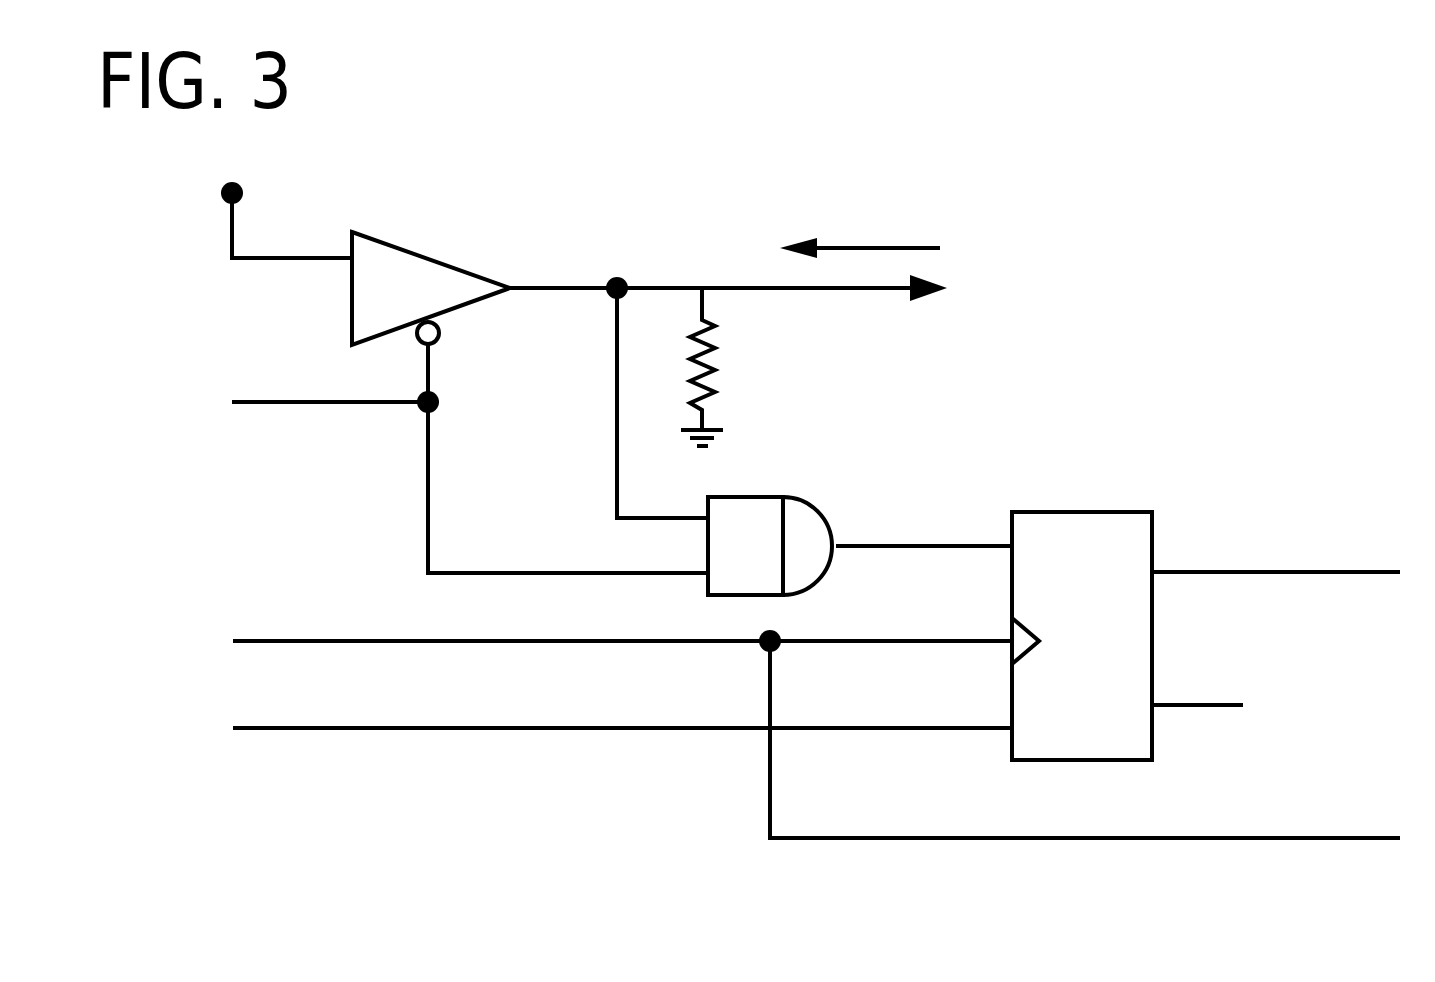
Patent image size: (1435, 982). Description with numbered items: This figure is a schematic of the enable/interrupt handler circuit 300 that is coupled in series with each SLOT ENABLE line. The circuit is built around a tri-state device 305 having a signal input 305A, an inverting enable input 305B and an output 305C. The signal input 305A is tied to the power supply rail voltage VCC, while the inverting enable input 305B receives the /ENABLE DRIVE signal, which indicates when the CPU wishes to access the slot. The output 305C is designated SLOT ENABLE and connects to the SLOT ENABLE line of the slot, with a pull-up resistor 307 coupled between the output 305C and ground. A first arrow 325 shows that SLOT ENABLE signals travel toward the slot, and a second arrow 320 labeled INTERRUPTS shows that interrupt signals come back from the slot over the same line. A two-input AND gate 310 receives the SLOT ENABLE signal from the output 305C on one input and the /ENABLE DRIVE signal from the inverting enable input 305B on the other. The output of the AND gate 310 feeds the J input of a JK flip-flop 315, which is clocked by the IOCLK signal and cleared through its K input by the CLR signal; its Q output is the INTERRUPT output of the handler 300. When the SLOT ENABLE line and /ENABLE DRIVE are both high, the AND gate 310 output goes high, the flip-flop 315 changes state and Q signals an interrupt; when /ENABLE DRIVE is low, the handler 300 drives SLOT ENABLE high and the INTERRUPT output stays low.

The enable/interrupt handler circuit 300 is at (1170, 170).
The tri-state device 305 is at (448, 262).
The signal input 305A is at (335, 258).
The inverting enable input 305B is at (418, 345).
The output 305C is at (507, 287).
The pull-up resistor 307 is at (708, 352).
The AND gate 310 is at (733, 497).
The JK flip-flop 315 is at (1031, 512).
The second arrow 320 is at (920, 247).
The first arrow 325 is at (925, 295).